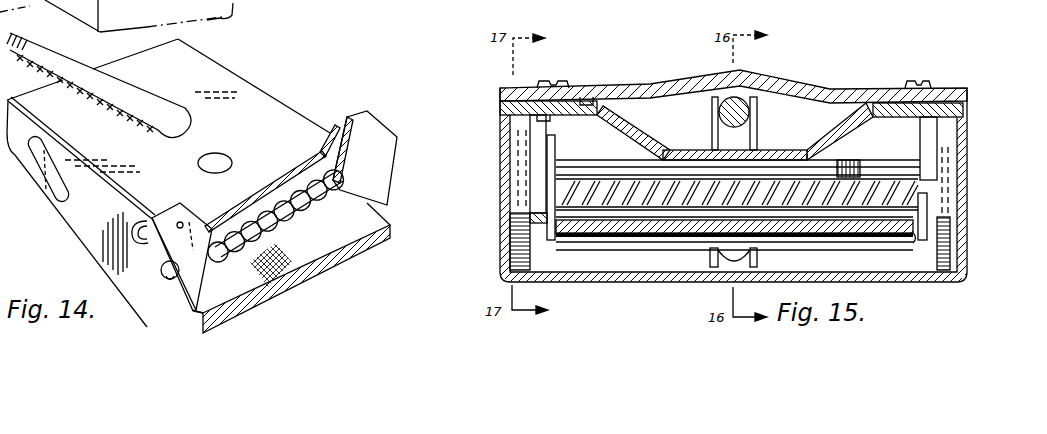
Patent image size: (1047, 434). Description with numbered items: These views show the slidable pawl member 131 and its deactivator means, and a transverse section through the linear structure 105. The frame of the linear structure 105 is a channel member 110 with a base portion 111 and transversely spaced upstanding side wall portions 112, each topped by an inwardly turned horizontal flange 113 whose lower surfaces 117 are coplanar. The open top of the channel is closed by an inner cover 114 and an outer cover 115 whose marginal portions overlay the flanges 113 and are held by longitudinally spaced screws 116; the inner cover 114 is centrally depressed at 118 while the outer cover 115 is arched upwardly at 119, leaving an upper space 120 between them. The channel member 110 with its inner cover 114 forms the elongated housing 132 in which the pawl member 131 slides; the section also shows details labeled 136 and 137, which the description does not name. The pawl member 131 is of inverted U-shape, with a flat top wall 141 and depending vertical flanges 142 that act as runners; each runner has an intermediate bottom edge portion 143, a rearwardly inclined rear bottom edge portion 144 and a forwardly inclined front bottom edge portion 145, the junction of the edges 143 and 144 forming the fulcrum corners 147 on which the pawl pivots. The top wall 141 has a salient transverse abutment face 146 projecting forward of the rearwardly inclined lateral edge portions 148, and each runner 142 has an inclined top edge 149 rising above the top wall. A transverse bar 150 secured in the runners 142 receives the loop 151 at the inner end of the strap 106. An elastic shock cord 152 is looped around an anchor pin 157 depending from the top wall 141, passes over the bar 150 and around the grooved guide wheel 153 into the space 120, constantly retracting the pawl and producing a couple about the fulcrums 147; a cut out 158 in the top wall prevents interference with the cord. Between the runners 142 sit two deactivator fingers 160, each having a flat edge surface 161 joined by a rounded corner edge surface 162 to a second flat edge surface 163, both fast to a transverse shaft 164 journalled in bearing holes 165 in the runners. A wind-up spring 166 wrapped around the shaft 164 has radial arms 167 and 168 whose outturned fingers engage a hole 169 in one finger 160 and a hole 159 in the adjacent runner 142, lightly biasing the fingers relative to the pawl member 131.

In FIG. 15, the linear structure 105 is at (967, 88).
In FIG. 14, the strap 106 is at (336, 250).
In FIG. 15, the strap 106 is at (637, 228).
In FIG. 14, the channel member 110 is at (417, 5).
In FIG. 15, the channel member 110 is at (503, 277).
In FIG. 14, the base portion 111 is at (358, 1).
In FIG. 15, the base portion 111 is at (697, 280).
In FIG. 15, the side wall portions 112 is at (505, 228).
In FIG. 15, the horizontal flange 113 is at (593, 116).
In FIG. 15, the inner cover 114 is at (500, 106).
In FIG. 15, the outer cover 115 is at (500, 92).
In FIG. 15, the screws 116 is at (556, 86).
In FIG. 15, the lower surfaces 117 is at (580, 117).
In FIG. 15, the depressed portion 118 is at (690, 150).
In FIG. 15, the arched portion 119 is at (752, 72).
In FIG. 15, the upper space 120 is at (853, 68).
In FIG. 14, the pawl member 131 is at (268, 91).
In FIG. 15, the pawl member 131 is at (522, 147).
In FIG. 15, the elongated housing 132 is at (595, 276).
In FIG. 15, the channel bottom 136 is at (778, 157).
In FIG. 14, the clip 137 is at (458, 6).
In FIG. 15, the clip 137 is at (868, 271).
In FIG. 14, the top wall portion 141 is at (220, 77).
In FIG. 15, the top wall portion 141 is at (623, 157).
In FIG. 14, the vertical flanges 142 is at (82, 240).
In FIG. 15, the vertical flanges 142 is at (512, 207).
In FIG. 14, the intermediate bottom edge portion 143 is at (103, 276).
In FIG. 14, the rear bottom edge portion 144 is at (57, 222).
In FIG. 14, the front bottom edge portion 145 is at (158, 323).
In FIG. 15, the front bottom edge portion 145 is at (512, 255).
In FIG. 14, the abutment face 146 is at (267, 187).
In FIG. 15, the abutment face 146 is at (726, 158).
In FIG. 14, the fulcrum corners 147 is at (67, 242).
In FIG. 14, the inclined lateral edge portions 148 is at (317, 143).
In FIG. 15, the inclined lateral edge portions 148 is at (622, 165).
In FIG. 14, the inclined top edge 149 is at (163, 248).
In FIG. 15, the inclined top edge 149 is at (527, 165).
In FIG. 14, the transverse bar 150 is at (35, 152).
In FIG. 15, the transverse bar 150 is at (550, 238).
In FIG. 15, the loop 151 is at (870, 245).
In FIG. 14, the elastic shock cord 152 is at (37, 62).
In FIG. 15, the elastic shock cord 152 is at (741, 98).
In FIG. 15, the guide wheel 153 is at (718, 110).
In FIG. 14, the anchor pin 157 is at (215, 157).
In FIG. 14, the cut out 158 is at (133, 68).
In FIG. 14, the hole 159 is at (340, 138).
In FIG. 14, the deactivator fingers 160 is at (386, 157).
In FIG. 15, the deactivator fingers 160 is at (535, 125).
In FIG. 14, the flat edge surface 161 is at (368, 118).
In FIG. 15, the flat edge surface 161 is at (520, 115).
In FIG. 14, the rounded corner edge surface 162 is at (172, 200).
In FIG. 14, the second flat edge surface 163 is at (148, 220).
In FIG. 14, the transverse shaft 164 is at (163, 274).
In FIG. 15, the transverse shaft 164 is at (702, 206).
In FIG. 14, the bearing holes 165 is at (172, 283).
In FIG. 14, the wind-up spring 166 is at (285, 223).
In FIG. 15, the wind-up spring 166 is at (806, 207).
In FIG. 15, the radial arm 167 is at (555, 150).
In FIG. 14, the radial arm 168 is at (385, 158).
In FIG. 14, the hole 169 is at (160, 215).